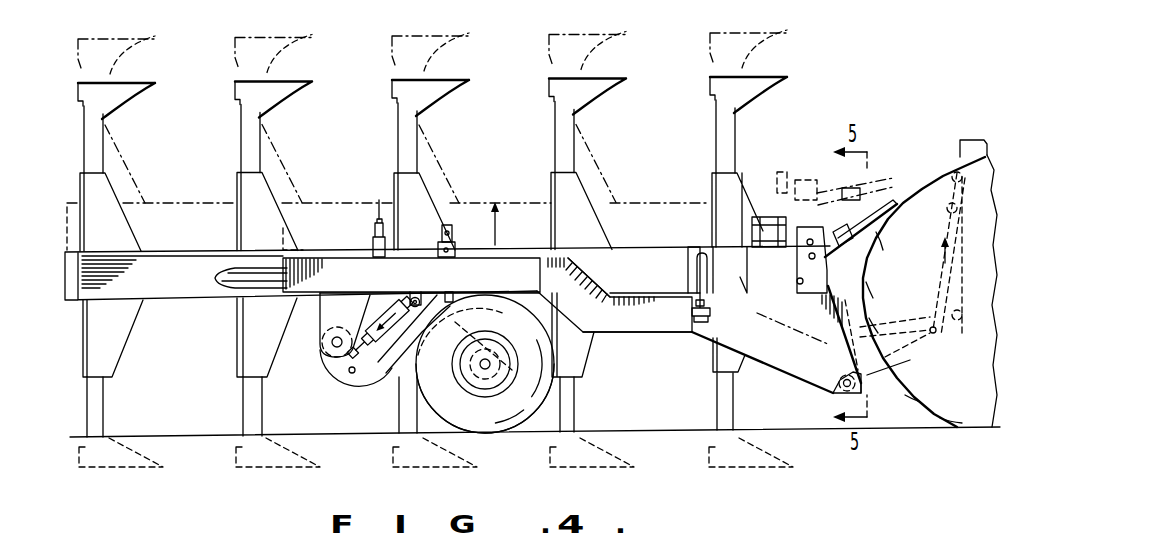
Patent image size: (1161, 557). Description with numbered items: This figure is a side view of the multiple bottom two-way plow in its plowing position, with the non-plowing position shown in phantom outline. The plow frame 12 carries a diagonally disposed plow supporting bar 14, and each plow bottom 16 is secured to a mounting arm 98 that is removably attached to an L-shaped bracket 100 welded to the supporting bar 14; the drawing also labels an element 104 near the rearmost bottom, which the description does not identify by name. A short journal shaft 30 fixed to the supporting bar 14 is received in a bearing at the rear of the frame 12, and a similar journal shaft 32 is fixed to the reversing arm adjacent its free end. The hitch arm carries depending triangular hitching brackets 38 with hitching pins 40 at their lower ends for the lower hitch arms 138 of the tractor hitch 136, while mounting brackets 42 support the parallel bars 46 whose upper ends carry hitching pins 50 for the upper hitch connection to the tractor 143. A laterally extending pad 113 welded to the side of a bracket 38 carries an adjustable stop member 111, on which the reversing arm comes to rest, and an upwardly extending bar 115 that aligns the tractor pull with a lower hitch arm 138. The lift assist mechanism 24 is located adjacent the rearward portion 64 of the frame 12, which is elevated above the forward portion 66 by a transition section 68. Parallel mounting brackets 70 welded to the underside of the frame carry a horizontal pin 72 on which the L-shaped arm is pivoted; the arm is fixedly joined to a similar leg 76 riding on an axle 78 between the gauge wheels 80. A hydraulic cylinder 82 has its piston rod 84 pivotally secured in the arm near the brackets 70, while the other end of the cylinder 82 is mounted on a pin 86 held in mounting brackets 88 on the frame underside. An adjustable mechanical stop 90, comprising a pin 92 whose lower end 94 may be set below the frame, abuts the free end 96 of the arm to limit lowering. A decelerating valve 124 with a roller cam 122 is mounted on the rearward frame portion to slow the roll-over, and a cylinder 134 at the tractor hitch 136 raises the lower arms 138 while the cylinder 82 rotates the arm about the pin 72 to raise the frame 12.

The plow frame 12 is at (519, 287).
The plow supporting bar 14 is at (167, 288).
The plow bottom 16 is at (127, 103).
The lift assist mechanism 24 is at (343, 397).
The journal shaft 30 is at (232, 288).
The journal shaft 32 is at (745, 280).
The hitching bracket 38 is at (788, 375).
The hitching pin 40 is at (830, 392).
The mounting bracket 42 is at (822, 278).
The parallel bar 46 is at (807, 224).
The hitching pin 50 is at (840, 227).
The rearward portion of the plow frame 64 is at (405, 256).
The forward portion of the plow frame 66 is at (624, 328).
The transition section 68 is at (585, 272).
The mounting bracket 70 is at (322, 320).
The horizontal pin 72 is at (333, 343).
The leg 76 is at (503, 333).
The axle 78 is at (484, 372).
The gauge wheel 80 is at (503, 428).
The hydraulic cylinder 82 is at (388, 393).
The piston rod 84 is at (337, 365).
The pin 86 is at (427, 289).
The mounting bracket 88 is at (403, 294).
The adjustable mechanical stop 90 is at (458, 238).
The pin 92 is at (453, 218).
The lower end of the pin 94 is at (449, 295).
The free end of the arm 96 is at (467, 312).
The mounting arm 98 is at (260, 138).
The L-shaped bracket 100 is at (113, 193).
The clamp bracket 104 is at (763, 220).
The adjustable stop member 111 is at (687, 292).
The pad 113 is at (697, 340).
The bar 115 is at (697, 247).
The roller cam 122 is at (379, 200).
The decelerating valve 124 is at (373, 247).
The hydraulic cylinder 134 is at (933, 268).
The tractor hitch 136 is at (895, 177).
The lower hitch arm 138 is at (900, 370).
The tractor 143 is at (971, 137).